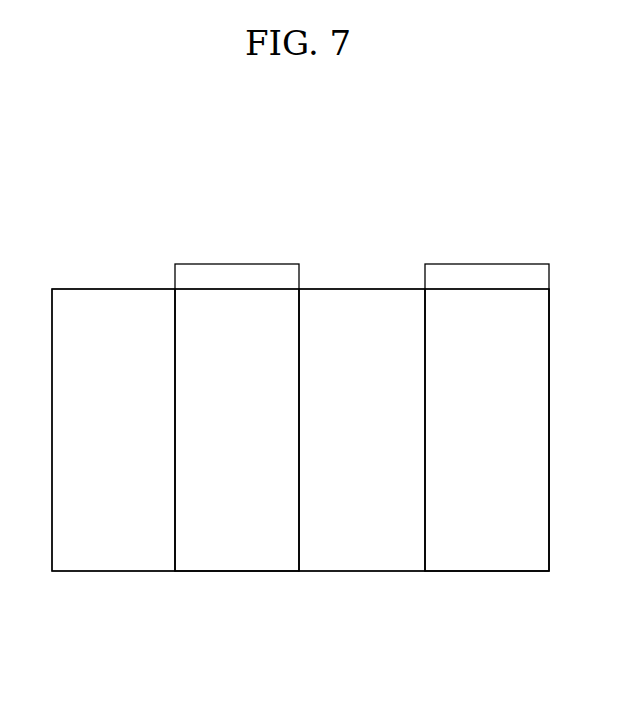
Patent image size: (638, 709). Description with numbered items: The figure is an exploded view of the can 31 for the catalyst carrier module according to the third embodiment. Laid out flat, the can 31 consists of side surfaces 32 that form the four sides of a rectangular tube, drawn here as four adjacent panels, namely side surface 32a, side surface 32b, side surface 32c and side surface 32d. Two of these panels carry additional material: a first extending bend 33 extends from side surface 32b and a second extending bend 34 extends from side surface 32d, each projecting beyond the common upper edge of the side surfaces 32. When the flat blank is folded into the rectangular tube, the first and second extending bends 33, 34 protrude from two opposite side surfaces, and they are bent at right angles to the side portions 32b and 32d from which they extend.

The can 31 is at (413, 232).
The side surfaces 32 is at (87, 296).
The first extending bend 33 is at (238, 263).
The second extending bend 34 is at (493, 262).
The side surface 32a is at (117, 541).
The side surface 32b is at (237, 540).
The side surface 32c is at (360, 541).
The side surface 32d is at (489, 541).